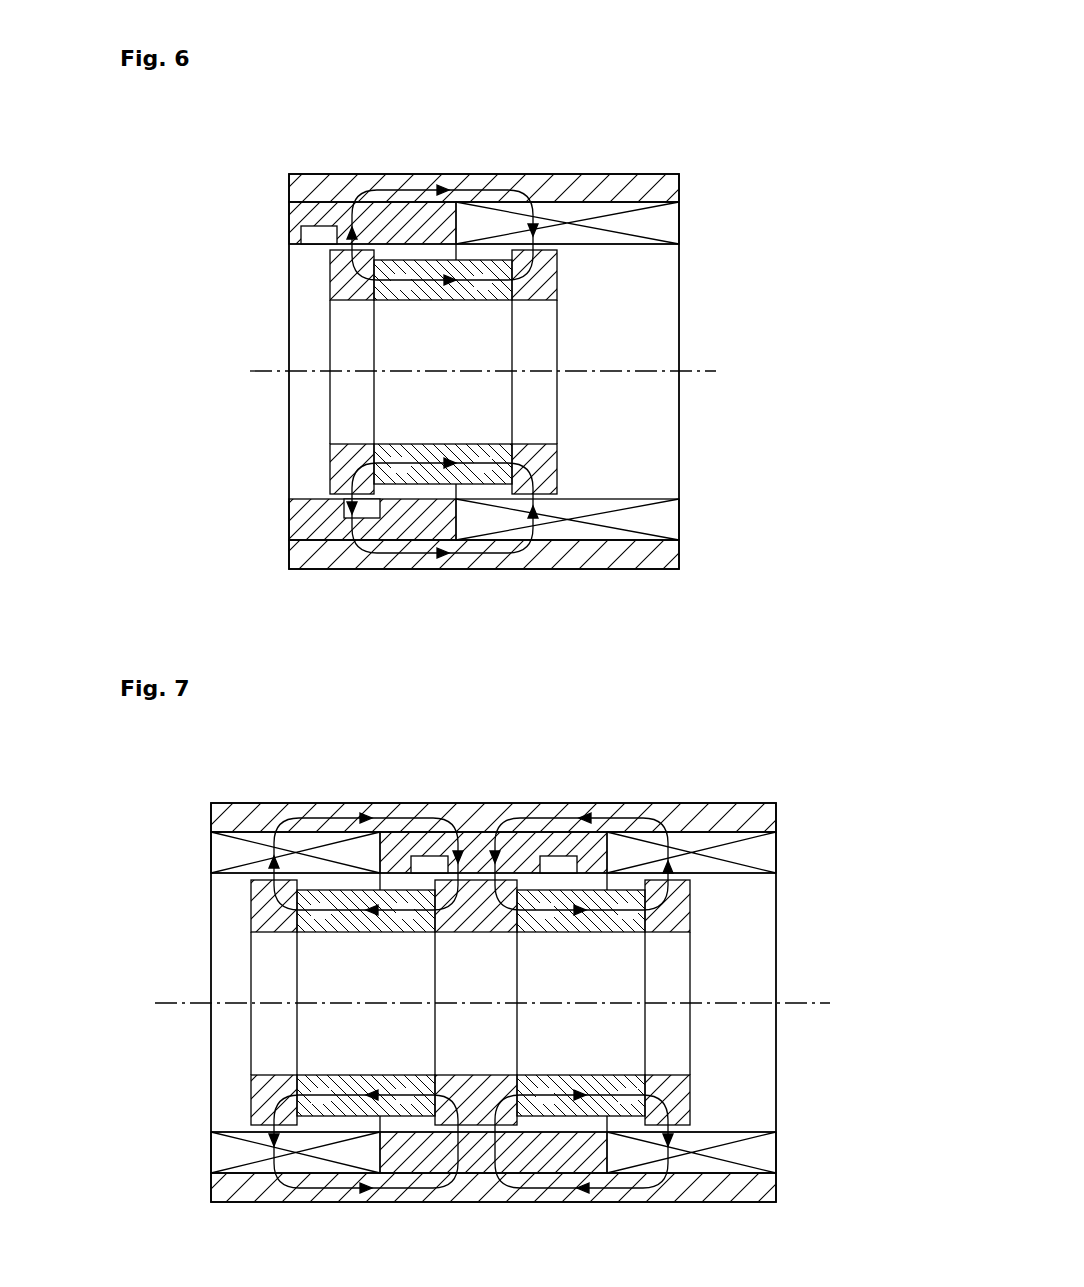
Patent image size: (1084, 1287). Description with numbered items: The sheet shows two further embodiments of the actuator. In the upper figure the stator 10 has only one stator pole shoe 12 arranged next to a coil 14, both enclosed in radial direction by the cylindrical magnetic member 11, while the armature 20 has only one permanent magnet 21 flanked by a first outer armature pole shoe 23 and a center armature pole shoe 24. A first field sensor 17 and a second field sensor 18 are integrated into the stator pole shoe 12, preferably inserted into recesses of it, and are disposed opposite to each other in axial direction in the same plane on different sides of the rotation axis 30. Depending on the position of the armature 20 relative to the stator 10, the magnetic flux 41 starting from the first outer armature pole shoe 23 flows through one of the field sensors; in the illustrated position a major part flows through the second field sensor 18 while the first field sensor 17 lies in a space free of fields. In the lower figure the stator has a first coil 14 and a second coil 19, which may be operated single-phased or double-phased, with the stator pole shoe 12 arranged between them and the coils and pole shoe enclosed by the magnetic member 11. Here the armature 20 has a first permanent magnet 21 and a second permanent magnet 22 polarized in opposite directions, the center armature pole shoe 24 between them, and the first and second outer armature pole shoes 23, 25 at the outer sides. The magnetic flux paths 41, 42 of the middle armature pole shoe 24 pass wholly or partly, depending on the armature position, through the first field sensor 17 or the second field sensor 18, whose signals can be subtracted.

In FIG. 6, the stator 10 is at (527, 371).
In FIG. 7, the stator 10 is at (538, 971).
In FIG. 6, the magnetic member 11 is at (537, 192).
In FIG. 7, the magnetic member 11 is at (518, 820).
In FIG. 6, the first stator pole shoe 12 is at (415, 220).
In FIG. 7, the first stator pole shoe 12 is at (465, 850).
In FIG. 6, the coil 14 is at (573, 214).
In FIG. 7, the coil 14 is at (298, 847).
In FIG. 6, the first field sensor 17 is at (322, 233).
In FIG. 7, the first field sensor 17 is at (430, 865).
In FIG. 6, the second field sensor 18 is at (367, 510).
In FIG. 7, the second field sensor 18 is at (558, 865).
In FIG. 7, the second coil 19 is at (694, 847).
In FIG. 6, the armature 20 is at (485, 372).
In FIG. 7, the armature 20 is at (534, 1002).
In FIG. 6, the first permanent magnet 21 is at (446, 296).
In FIG. 7, the first permanent magnet 21 is at (342, 937).
In FIG. 7, the second permanent magnet 22 is at (599, 937).
In FIG. 6, the first outer armature pole shoe 23 is at (355, 296).
In FIG. 7, the first outer armature pole shoe 23 is at (274, 937).
In FIG. 6, the center armature pole shoe 24 is at (536, 296).
In FIG. 7, the center armature pole shoe 24 is at (480, 937).
In FIG. 7, the second outer armature pole shoe 25 is at (669, 937).
In FIG. 6, the axis of rotation 30 is at (708, 373).
In FIG. 7, the axis of rotation 30 is at (823, 1005).
In FIG. 6, the magnetic flux path 41 is at (473, 196).
In FIG. 7, the magnetic flux path 41 is at (385, 820).
In FIG. 7, the second magnetic flux path 42 is at (612, 820).